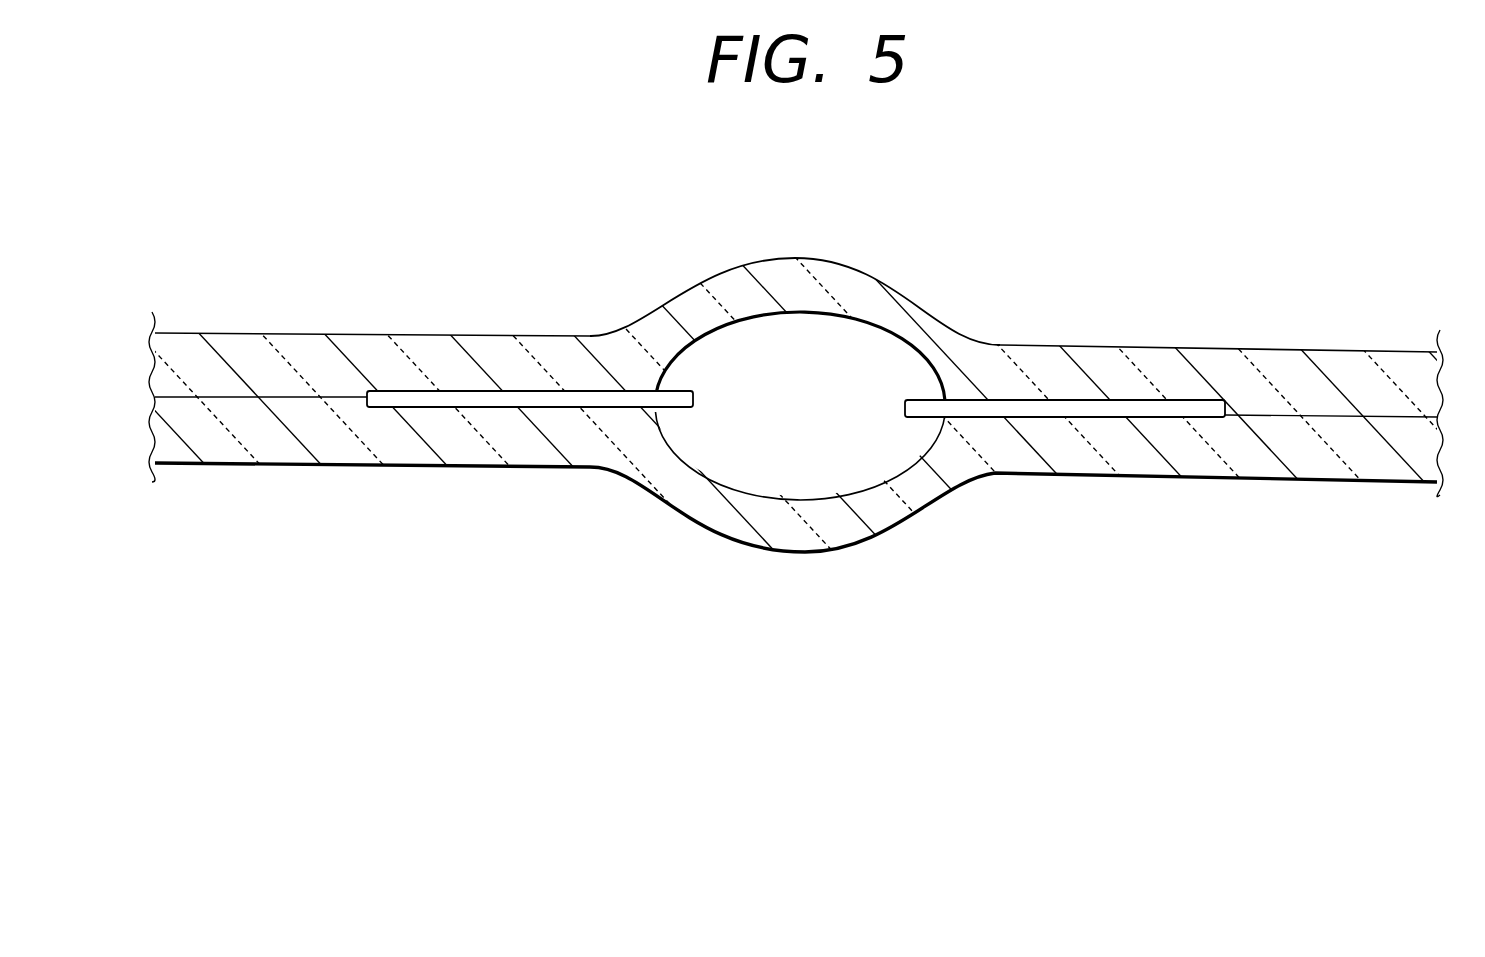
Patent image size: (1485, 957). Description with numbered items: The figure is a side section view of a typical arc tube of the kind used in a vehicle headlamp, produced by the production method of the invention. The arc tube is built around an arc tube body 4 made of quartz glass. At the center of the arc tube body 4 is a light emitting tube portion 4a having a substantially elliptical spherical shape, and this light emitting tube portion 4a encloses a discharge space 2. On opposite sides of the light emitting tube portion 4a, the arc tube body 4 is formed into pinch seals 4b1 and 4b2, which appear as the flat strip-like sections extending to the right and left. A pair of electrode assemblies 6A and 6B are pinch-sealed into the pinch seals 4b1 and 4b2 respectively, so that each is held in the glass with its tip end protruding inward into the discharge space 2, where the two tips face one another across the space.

The discharge space 2 is at (813, 418).
The arc tube body 4 is at (668, 304).
The light emitting tube portion 4a is at (833, 285).
The pinch seal 4b1 is at (1186, 457).
The pinch seal 4b2 is at (409, 445).
The electrode assembly 6A is at (1127, 400).
The electrode assembly 6B is at (471, 391).